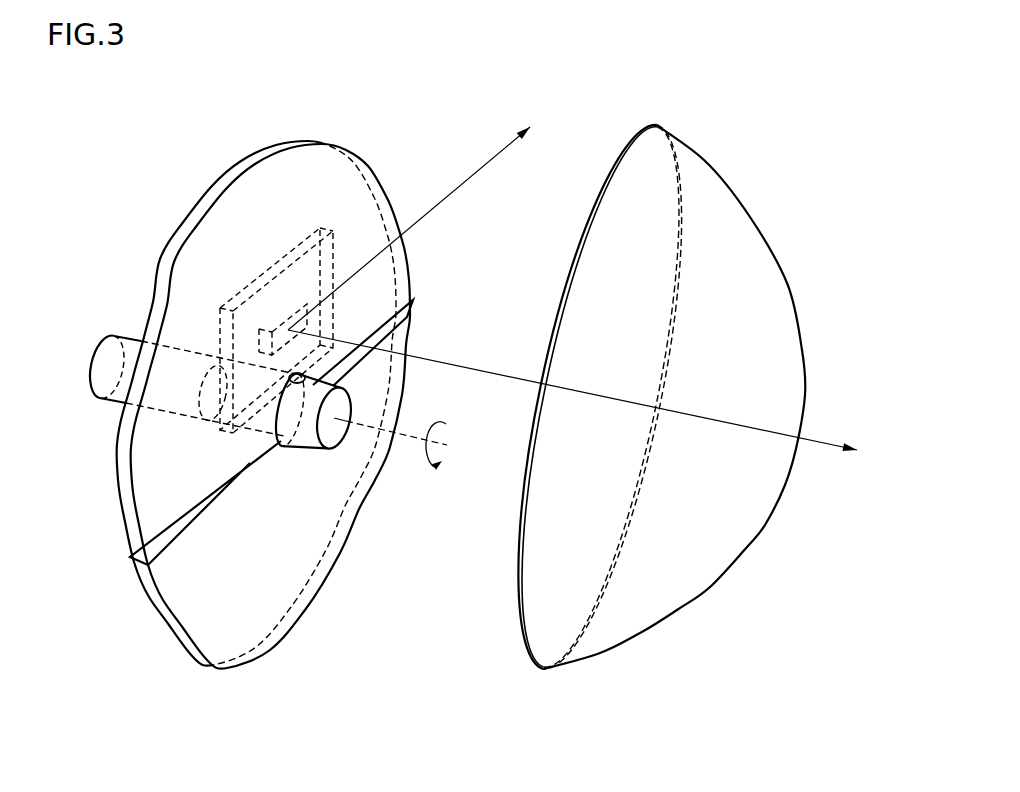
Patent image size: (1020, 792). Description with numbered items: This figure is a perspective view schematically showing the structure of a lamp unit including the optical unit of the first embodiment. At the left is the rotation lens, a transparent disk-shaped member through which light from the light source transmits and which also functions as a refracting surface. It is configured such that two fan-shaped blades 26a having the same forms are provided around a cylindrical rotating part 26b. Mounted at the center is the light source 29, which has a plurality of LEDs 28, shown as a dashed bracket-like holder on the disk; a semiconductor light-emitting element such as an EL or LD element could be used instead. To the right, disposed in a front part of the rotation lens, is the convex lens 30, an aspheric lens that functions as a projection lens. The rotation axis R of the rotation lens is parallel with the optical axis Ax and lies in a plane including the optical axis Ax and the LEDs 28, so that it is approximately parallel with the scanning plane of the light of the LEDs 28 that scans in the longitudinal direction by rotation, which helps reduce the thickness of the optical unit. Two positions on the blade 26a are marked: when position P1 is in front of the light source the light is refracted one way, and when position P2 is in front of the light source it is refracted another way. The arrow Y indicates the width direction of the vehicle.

The fan-shaped blade 26a is at (268, 192).
The cylindrical rotating part 26b is at (120, 403).
The LED 28 is at (310, 260).
The light source 29 is at (293, 312).
The convex lens 30 is at (748, 216).
The position of the blade P1 is at (412, 318).
The position of the blade P2 is at (145, 542).
The rotation axis R is at (404, 441).
The arrow indicating vehicle width direction Y is at (409, 220).
The optical axis Ax is at (590, 398).